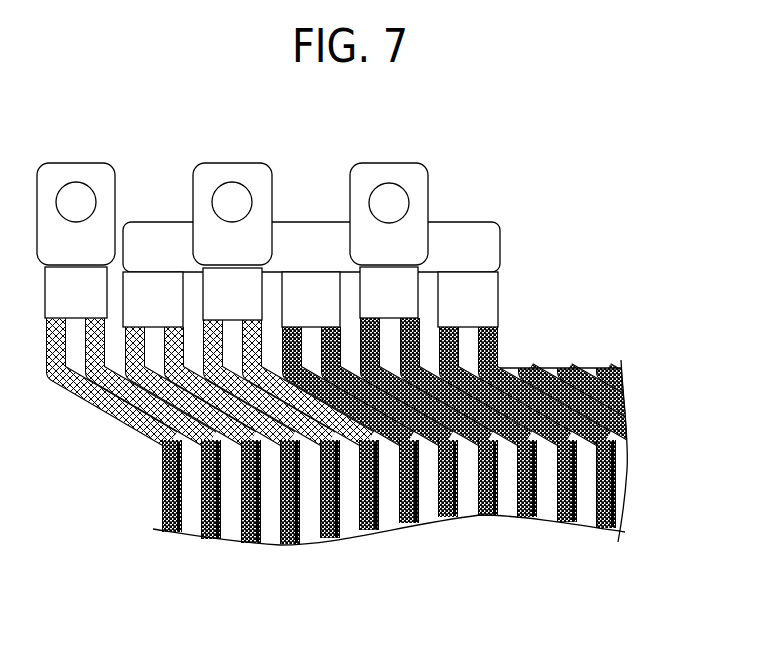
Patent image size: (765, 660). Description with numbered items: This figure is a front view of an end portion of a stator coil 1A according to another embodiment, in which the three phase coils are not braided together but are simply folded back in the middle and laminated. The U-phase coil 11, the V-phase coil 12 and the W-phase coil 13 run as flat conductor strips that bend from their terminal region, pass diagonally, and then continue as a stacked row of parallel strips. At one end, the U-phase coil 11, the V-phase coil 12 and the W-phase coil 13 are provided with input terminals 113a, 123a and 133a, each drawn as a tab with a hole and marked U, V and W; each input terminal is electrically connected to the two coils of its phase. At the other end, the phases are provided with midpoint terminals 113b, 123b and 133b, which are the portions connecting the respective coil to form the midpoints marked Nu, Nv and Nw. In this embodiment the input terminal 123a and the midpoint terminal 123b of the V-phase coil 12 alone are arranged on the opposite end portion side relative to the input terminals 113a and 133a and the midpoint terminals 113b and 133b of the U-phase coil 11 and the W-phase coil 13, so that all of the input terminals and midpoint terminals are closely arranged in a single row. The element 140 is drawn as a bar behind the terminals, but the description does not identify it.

The stator coil 1A is at (590, 154).
The U-phase coil 11 is at (150, 513).
The V-phase coil 12 is at (266, 513).
The W-phase coil 13 is at (350, 512).
The input terminal 113a is at (74, 162).
The input terminal 133a is at (231, 162).
The input terminal 123a is at (386, 162).
The midpoint terminal 123b is at (153, 272).
The midpoint terminal 113b is at (309, 272).
The midpoint terminal 133b is at (465, 272).
The holder 140 is at (502, 244).